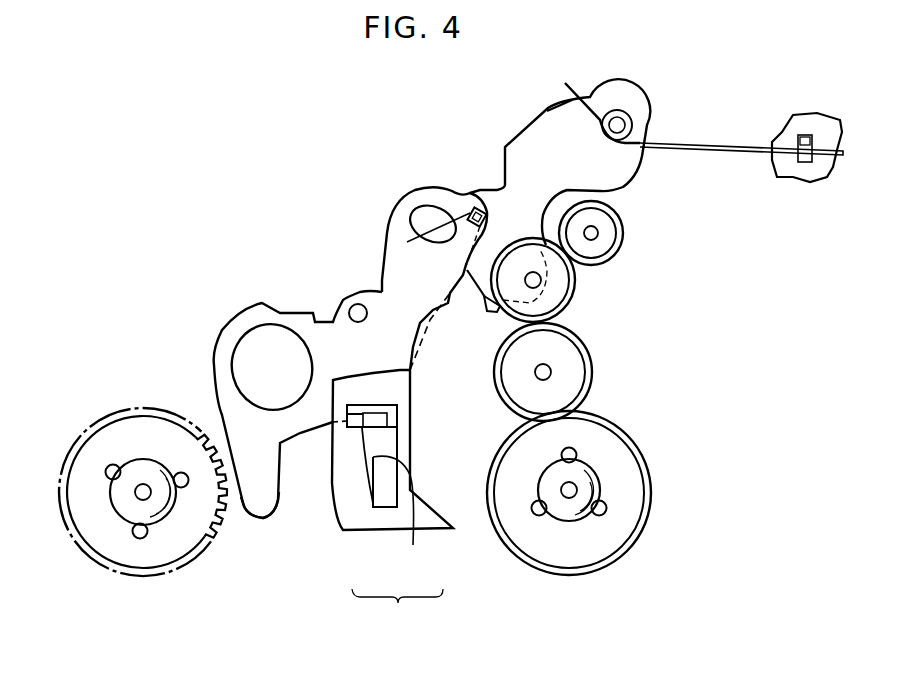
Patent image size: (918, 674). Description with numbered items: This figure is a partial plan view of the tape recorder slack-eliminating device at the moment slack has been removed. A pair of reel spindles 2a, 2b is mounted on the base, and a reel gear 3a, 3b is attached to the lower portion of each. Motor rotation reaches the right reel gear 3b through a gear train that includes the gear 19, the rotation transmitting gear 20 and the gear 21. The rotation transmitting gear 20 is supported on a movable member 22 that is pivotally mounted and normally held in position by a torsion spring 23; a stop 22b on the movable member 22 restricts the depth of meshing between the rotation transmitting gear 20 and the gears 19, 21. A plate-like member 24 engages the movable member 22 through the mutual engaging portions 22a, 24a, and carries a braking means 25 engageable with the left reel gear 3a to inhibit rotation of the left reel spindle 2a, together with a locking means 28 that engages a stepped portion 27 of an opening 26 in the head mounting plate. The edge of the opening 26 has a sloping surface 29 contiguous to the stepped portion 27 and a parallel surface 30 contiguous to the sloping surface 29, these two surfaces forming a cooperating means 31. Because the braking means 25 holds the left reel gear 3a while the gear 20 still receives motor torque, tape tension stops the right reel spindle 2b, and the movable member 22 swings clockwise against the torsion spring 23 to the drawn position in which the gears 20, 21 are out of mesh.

The reel spindle 2a is at (127, 520).
The reel spindle 2b is at (587, 522).
The reel gear 3a is at (139, 525).
The reel gear 3b is at (605, 515).
The gear 19 is at (623, 228).
The rotation transmitting gear 20 is at (580, 290).
The gear 21 is at (593, 360).
The movable member 22 is at (503, 142).
The engaging portion 22a is at (468, 198).
The stop 22b is at (488, 308).
The torsion spring 23 is at (713, 147).
The plate-like member 24 is at (394, 203).
The engaging portion 24a is at (407, 242).
The braking means 25 is at (235, 504).
The opening 26 is at (387, 452).
The stepped portion 27 is at (360, 433).
The locking means 28 is at (400, 414).
The sloping surface 29 is at (413, 545).
The parallel surface 30 is at (385, 507).
The cooperating means 31 is at (397, 608).